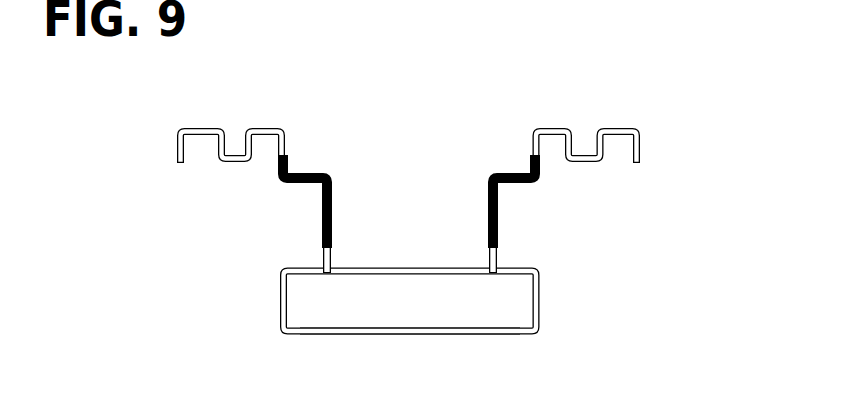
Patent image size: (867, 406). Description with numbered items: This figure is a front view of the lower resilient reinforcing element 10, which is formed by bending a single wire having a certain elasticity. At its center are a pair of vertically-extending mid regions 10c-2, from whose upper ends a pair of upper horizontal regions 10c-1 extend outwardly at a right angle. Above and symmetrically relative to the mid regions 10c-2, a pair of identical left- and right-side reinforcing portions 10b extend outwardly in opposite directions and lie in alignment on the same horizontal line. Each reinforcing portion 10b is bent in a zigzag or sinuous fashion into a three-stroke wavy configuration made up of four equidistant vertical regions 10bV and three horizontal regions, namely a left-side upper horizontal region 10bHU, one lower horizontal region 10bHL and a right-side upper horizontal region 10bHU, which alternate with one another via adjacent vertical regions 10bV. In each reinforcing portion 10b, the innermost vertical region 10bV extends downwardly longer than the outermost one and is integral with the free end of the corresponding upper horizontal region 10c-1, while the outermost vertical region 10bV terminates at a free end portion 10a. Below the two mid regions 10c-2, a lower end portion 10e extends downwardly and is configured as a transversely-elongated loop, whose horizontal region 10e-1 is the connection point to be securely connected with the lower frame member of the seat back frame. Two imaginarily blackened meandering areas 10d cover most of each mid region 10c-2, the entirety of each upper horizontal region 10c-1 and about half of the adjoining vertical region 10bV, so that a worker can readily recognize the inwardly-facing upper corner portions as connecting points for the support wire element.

The lower resilient reinforcing element 10 is at (194, 275).
The end portion 10a is at (178, 162).
The reinforcing portion 10b is at (285, 105).
The upper horizontal region 10bHU is at (192, 130).
The vertical region 10bV is at (177, 150).
The lower horizontal region 10bHL is at (233, 163).
The upper horizontal region 10c-1 is at (291, 174).
The vertically-extending mid region 10c-2 is at (331, 259).
The meandering blackened area 10d is at (341, 194).
The lower end portion 10e is at (280, 311).
The horizontal region of lower end portion 10e-1 is at (396, 336).